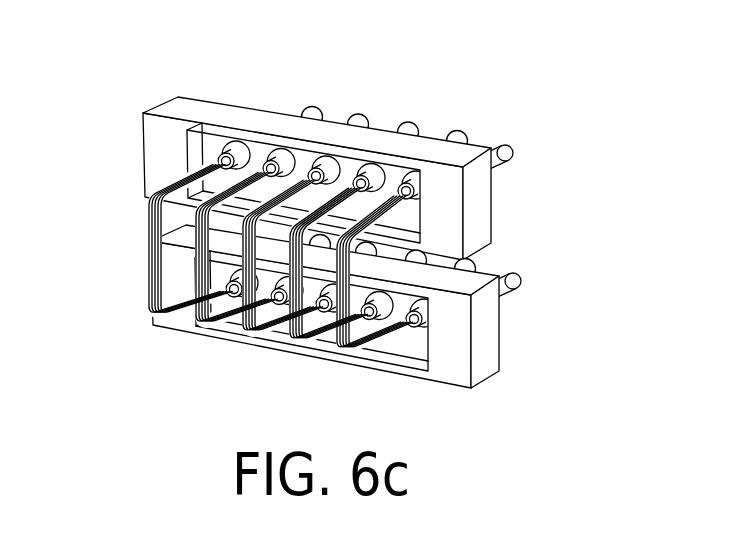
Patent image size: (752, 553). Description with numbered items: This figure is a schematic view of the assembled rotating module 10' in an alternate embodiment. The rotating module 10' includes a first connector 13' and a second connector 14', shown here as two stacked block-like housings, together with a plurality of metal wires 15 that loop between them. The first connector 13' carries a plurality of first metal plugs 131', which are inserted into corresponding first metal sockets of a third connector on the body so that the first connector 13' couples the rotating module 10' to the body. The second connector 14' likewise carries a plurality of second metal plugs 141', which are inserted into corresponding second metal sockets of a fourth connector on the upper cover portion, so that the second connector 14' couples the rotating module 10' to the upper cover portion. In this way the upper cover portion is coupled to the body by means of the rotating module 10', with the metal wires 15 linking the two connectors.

The rotating module 10' is at (339, 204).
The first connector 13' is at (386, 306).
The first metal plugs 131' is at (440, 281).
The second connector 14' is at (381, 178).
The second metal plugs 141' is at (436, 153).
The metal wires 15 is at (150, 273).